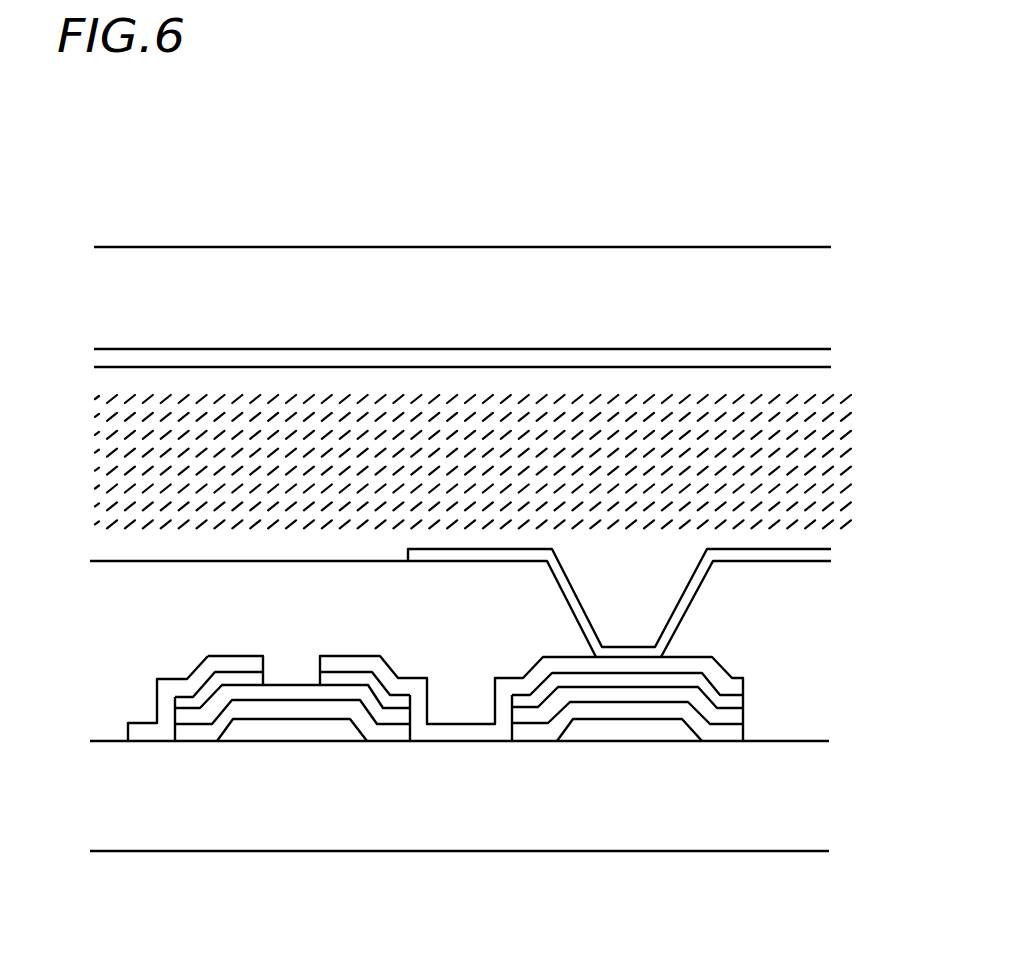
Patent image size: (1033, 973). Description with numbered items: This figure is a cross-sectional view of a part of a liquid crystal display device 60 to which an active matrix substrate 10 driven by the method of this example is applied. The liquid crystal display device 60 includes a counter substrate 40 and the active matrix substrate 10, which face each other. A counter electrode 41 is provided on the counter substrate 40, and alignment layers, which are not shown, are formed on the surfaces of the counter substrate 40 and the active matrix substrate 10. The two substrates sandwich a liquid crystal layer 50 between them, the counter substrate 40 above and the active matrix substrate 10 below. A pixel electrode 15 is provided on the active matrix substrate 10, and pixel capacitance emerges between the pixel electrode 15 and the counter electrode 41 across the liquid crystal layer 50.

The liquid crystal display device 60 is at (161, 167).
The counter substrate 40 is at (72, 245).
The counter electrode 41 is at (755, 363).
The liquid crystal layer 50 is at (785, 461).
The pixel electrode 15 is at (768, 557).
The active matrix substrate 10 is at (70, 557).